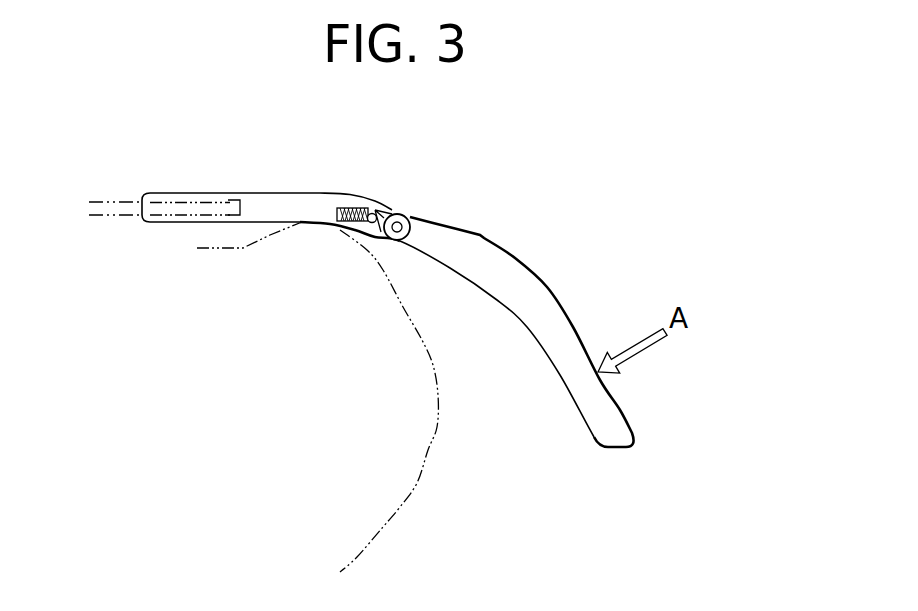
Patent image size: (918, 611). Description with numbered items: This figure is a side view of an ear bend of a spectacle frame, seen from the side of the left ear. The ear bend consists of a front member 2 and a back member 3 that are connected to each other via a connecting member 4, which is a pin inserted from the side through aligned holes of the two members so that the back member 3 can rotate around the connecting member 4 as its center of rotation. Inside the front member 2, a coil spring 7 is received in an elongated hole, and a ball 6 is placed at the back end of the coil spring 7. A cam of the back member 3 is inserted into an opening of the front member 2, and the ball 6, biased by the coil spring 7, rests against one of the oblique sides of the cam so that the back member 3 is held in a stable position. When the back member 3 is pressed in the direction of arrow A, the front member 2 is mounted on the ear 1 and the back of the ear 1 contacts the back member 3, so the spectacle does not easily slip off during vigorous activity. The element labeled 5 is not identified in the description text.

The ear 1 is at (431, 457).
The front member 2 is at (250, 203).
The back member 3 is at (503, 268).
The connecting member 4 is at (397, 227).
The pivot pin 5 is at (380, 238).
The ball 6 is at (371, 213).
The coil spring 7 is at (347, 207).